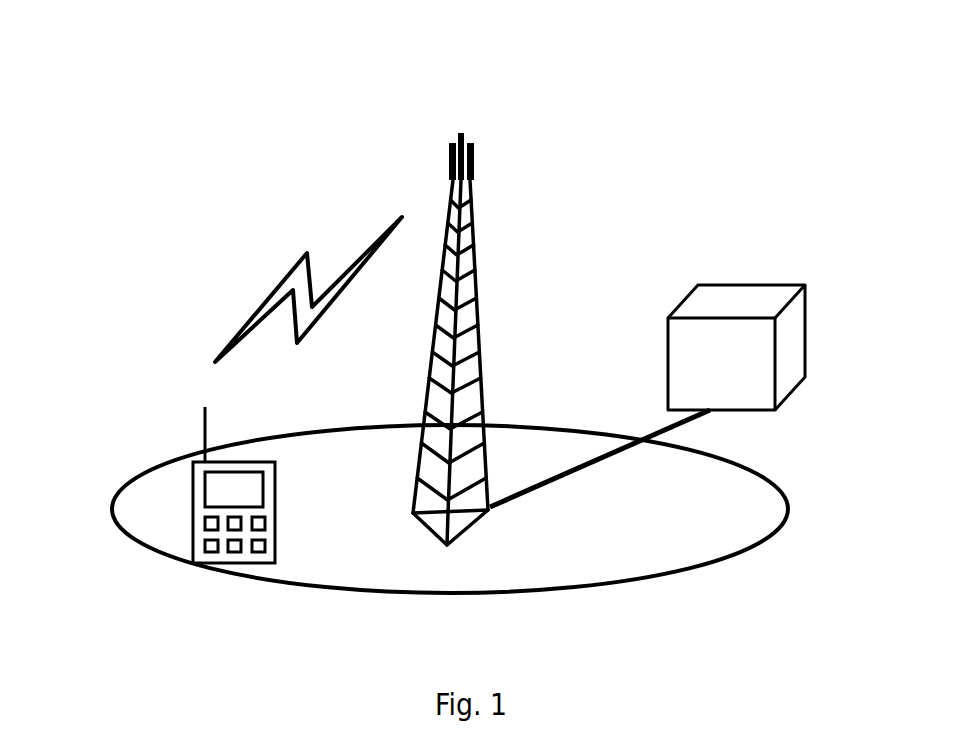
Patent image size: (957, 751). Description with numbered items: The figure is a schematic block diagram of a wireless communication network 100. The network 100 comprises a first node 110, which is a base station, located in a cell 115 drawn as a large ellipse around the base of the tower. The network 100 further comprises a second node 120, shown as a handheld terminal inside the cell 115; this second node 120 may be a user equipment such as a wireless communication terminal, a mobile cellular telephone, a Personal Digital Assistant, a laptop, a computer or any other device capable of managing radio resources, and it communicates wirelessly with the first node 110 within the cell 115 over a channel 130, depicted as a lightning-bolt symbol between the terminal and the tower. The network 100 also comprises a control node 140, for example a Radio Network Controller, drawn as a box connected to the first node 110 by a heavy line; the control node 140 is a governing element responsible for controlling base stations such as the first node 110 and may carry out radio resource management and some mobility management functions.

The wireless communication network 100 is at (730, 118).
The first node 110 is at (475, 273).
The cell 115 is at (735, 505).
The second node 120 is at (193, 515).
The channel 130 is at (297, 282).
The control node 140 is at (691, 361).